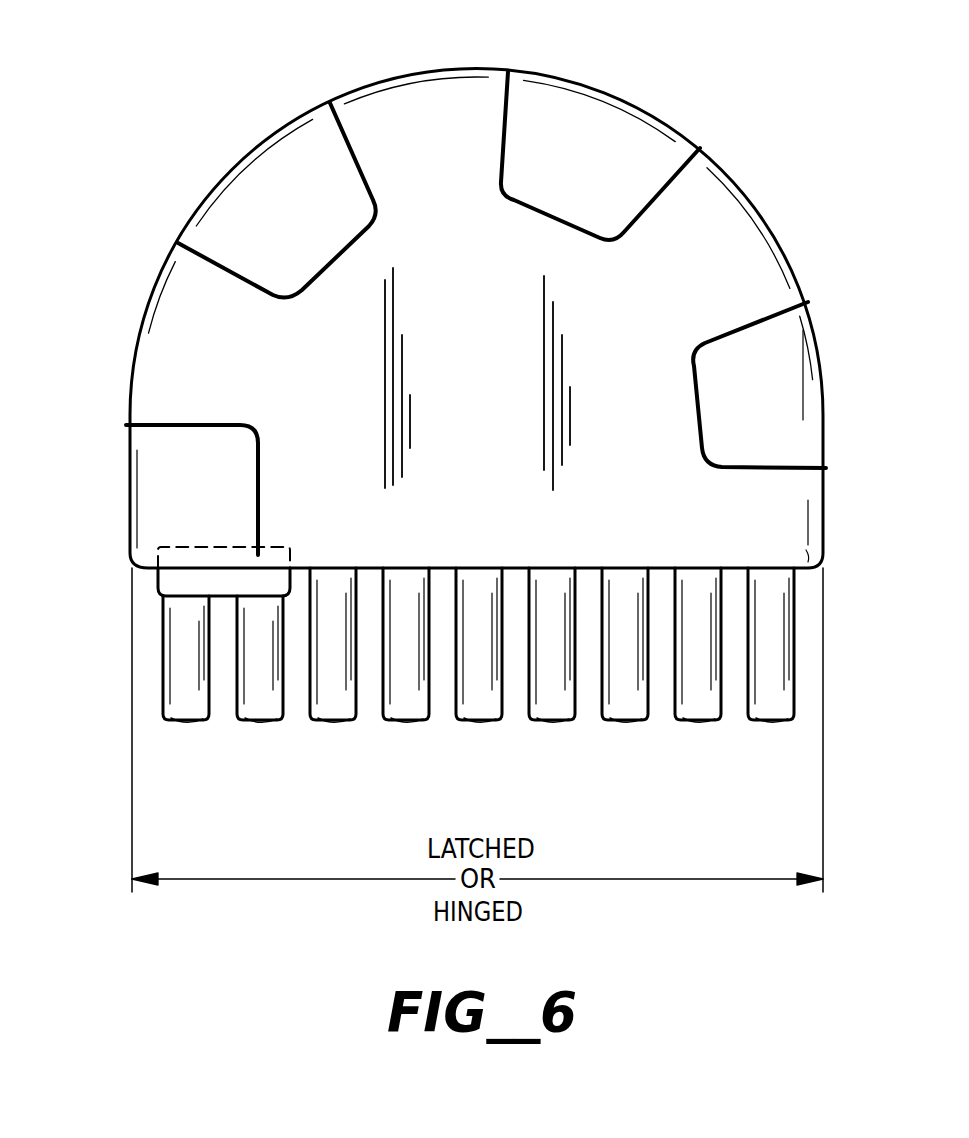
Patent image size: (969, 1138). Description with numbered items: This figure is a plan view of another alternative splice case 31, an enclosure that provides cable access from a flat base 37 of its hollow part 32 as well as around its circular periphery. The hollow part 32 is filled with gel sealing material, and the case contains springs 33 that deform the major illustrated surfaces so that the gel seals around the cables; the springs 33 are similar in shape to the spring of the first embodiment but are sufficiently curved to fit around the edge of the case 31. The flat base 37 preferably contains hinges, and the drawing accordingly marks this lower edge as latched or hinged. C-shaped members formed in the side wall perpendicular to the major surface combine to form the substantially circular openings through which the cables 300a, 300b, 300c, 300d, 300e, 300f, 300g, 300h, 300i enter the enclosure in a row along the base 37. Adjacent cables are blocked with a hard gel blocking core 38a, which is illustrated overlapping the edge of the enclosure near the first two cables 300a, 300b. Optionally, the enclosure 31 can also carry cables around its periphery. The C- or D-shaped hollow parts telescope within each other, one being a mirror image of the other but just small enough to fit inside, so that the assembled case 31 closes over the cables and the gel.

The splice case 31 is at (436, 66).
The hollow part 32 is at (283, 220).
The spring 33 is at (753, 313).
The flat base 37 is at (828, 562).
The hard gel blocking core 38a is at (160, 585).
The cable 300a is at (191, 695).
The cable 300b is at (264, 695).
The cable 300c is at (338, 695).
The cable 300d is at (409, 695).
The cable 300e is at (483, 695).
The cable 300f is at (556, 695).
The cable 300g is at (628, 695).
The cable 300h is at (701, 695).
The cable 300i is at (773, 695).